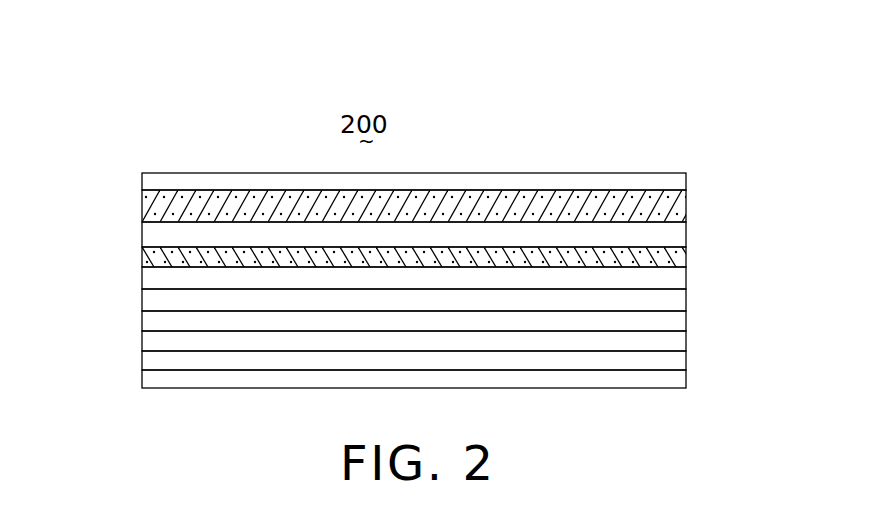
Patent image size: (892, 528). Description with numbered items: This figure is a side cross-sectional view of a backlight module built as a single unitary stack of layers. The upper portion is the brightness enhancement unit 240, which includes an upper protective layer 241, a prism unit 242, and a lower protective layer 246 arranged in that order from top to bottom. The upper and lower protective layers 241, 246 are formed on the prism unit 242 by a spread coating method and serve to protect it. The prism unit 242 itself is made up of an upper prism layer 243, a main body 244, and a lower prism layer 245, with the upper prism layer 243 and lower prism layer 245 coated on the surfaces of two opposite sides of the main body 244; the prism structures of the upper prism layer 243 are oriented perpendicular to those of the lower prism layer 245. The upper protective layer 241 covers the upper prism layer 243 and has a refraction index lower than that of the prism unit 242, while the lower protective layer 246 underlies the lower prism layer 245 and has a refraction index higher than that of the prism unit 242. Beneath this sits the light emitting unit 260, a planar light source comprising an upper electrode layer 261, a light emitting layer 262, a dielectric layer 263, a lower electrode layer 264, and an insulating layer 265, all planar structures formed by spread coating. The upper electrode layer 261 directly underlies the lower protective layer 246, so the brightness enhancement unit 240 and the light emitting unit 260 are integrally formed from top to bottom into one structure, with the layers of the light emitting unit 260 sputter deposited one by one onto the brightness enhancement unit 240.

The brightness enhancement unit 240 is at (72, 170).
The upper protective layer 241 is at (451, 173).
The prism unit 242 is at (140, 192).
The upper prism layer 243 is at (451, 205).
The main body 244 is at (451, 228).
The lower prism layer 245 is at (451, 251).
The lower protective layer 246 is at (451, 274).
The light emitting unit 260 is at (140, 290).
The upper electrode layer 261 is at (451, 299).
The light emitting layer 262 is at (451, 324).
The dielectric layer 263 is at (451, 347).
The lower electrode layer 264 is at (451, 368).
The insulating layer 265 is at (451, 390).